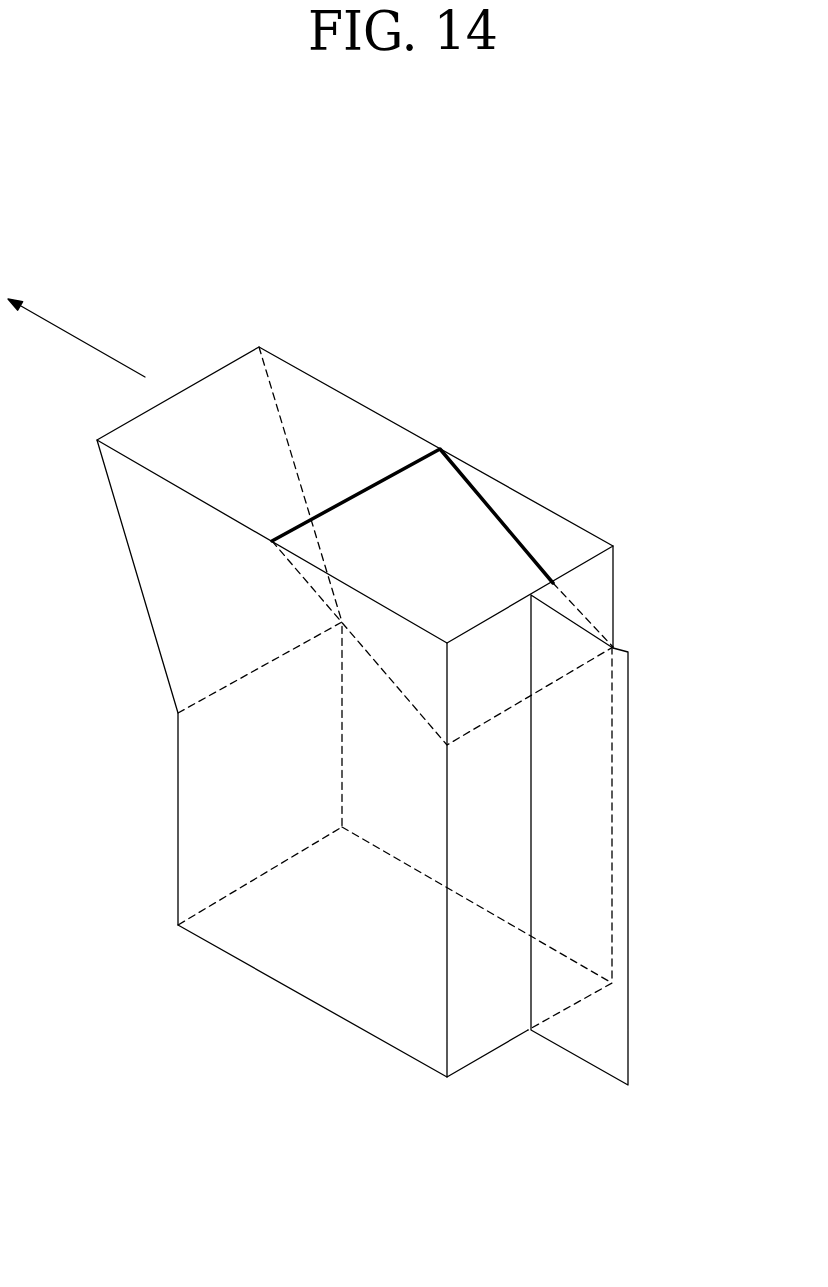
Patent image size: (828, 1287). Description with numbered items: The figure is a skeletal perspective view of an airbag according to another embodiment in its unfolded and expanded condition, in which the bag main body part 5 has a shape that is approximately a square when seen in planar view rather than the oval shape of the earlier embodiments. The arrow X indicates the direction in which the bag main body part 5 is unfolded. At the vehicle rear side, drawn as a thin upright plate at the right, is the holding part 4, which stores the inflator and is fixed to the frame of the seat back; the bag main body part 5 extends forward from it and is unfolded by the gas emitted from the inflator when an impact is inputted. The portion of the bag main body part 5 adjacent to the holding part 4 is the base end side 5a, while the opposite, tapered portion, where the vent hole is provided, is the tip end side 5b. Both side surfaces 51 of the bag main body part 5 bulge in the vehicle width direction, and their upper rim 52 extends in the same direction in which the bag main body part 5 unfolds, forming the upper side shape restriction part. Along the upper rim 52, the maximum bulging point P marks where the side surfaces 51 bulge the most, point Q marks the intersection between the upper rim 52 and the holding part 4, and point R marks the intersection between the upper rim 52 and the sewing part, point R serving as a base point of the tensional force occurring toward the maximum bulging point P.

The holding part 4 is at (613, 1027).
The bag main body part 5 is at (331, 699).
The base end side 5a is at (433, 952).
The tip end side 5b is at (192, 783).
The side surfaces 51 is at (278, 945).
The upper rim 52 is at (127, 453).
The arrow X is at (88, 343).
The maximum bulging point P is at (272, 538).
The point Q is at (447, 643).
The point R is at (443, 748).